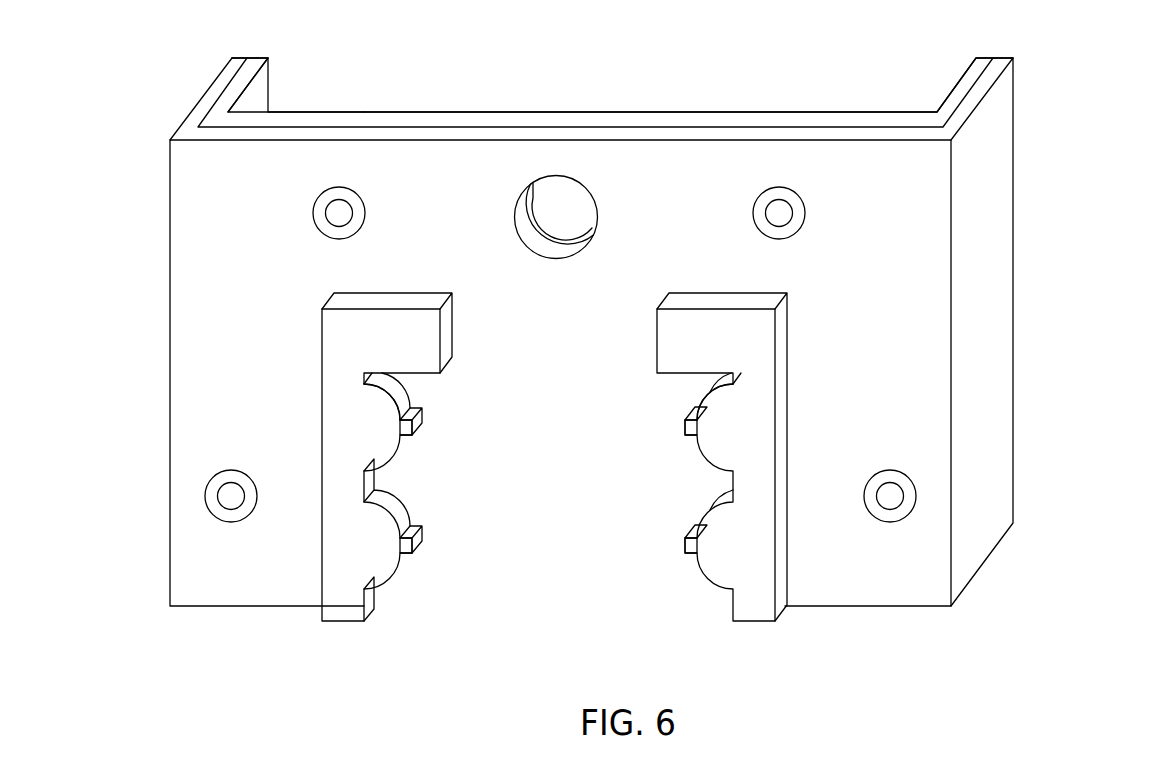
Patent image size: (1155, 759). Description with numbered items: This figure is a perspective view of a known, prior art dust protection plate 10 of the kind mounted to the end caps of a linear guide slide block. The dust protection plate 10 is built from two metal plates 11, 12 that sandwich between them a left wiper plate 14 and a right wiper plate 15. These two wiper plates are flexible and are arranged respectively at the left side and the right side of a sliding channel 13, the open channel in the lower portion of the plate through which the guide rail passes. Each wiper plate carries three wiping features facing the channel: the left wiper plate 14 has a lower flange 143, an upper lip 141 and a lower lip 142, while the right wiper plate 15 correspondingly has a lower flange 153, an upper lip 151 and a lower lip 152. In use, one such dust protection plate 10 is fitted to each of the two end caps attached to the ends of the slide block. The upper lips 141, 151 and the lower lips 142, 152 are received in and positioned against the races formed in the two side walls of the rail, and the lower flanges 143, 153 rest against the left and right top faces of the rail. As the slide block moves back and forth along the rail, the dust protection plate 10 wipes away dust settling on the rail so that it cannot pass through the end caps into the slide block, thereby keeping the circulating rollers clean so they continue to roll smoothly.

The dust protection plate 10 is at (1038, 90).
The metal plate 11 is at (332, 118).
The metal plate 12 is at (439, 135).
The sliding channel 13 is at (541, 564).
The left wiper plate 14 is at (425, 496).
The upper lip 141 is at (405, 427).
The lower lip 142 is at (405, 552).
The lower flange 143 is at (414, 377).
The right wiper plate 15 is at (683, 491).
The upper lip 151 is at (692, 427).
The lower lip 152 is at (692, 552).
The lower flange 153 is at (683, 377).